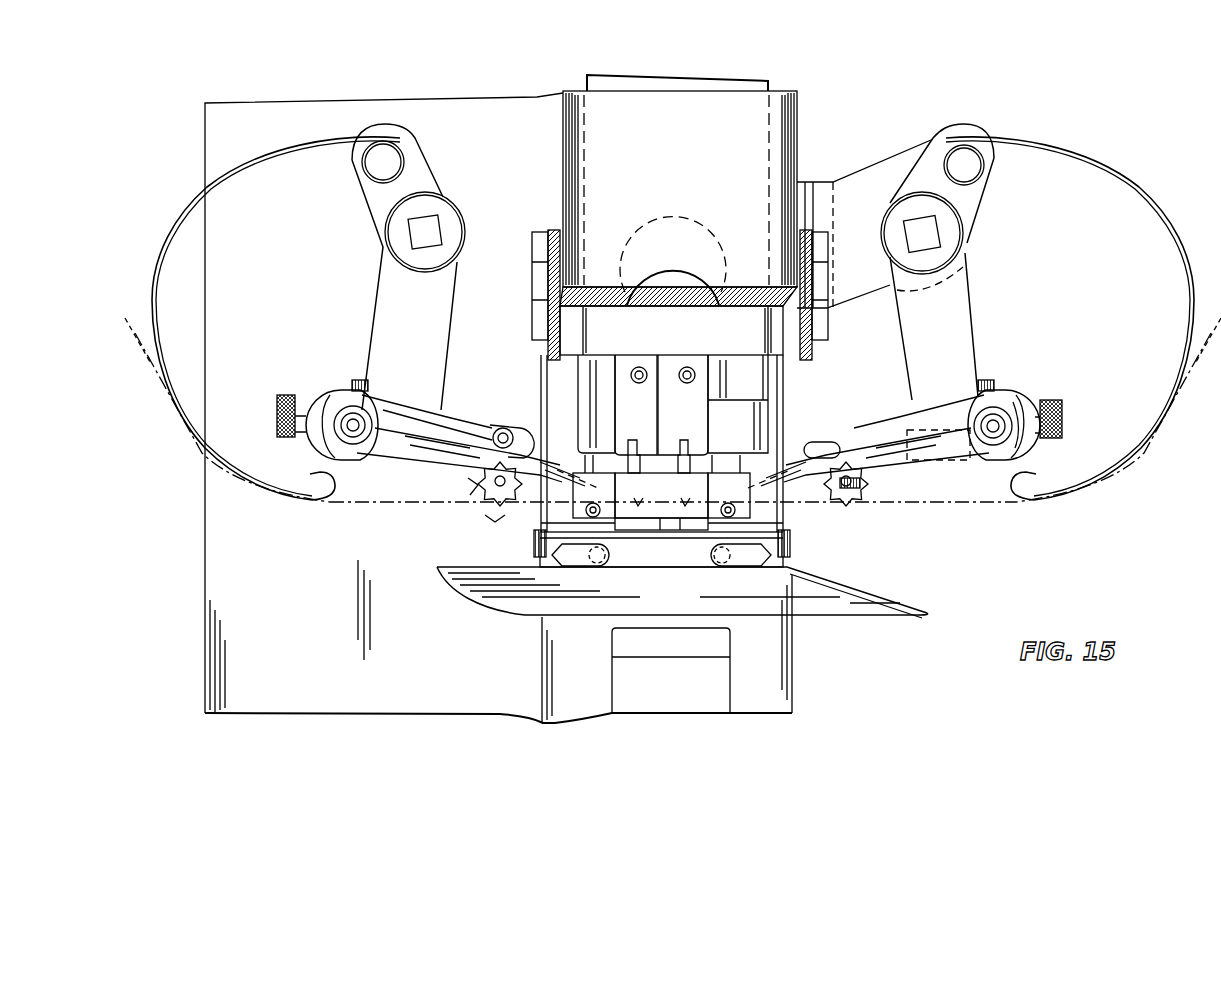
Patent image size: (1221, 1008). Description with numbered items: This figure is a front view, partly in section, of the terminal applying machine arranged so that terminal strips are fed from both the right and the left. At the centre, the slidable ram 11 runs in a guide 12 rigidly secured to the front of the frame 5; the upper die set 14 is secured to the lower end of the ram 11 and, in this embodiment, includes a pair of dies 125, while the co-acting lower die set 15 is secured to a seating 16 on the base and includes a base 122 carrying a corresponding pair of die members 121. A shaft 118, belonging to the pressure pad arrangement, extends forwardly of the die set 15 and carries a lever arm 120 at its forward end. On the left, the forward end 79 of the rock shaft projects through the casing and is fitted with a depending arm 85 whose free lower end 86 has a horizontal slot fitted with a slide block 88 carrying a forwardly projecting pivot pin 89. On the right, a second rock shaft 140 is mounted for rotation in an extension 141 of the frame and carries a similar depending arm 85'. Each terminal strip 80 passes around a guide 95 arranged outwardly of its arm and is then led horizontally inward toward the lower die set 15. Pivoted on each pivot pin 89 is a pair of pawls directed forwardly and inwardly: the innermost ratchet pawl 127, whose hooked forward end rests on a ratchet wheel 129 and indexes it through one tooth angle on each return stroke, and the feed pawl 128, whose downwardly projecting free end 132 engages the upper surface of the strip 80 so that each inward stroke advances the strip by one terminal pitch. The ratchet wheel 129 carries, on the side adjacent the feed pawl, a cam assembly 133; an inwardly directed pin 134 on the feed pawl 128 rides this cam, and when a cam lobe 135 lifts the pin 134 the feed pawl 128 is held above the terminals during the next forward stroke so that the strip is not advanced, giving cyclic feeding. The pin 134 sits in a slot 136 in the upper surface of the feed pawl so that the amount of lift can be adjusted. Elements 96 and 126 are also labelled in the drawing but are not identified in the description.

The frame 5 is at (483, 122).
The slidable ram 11 is at (746, 90).
The guide 12 is at (790, 120).
The upper die set 14 is at (712, 438).
The lower die set 15 is at (662, 530).
The seating 16 is at (645, 555).
The forward end of the rock shaft 79 is at (432, 226).
The terminal strip 80 is at (300, 497).
The depending arm 85 is at (389, 267).
The depending arm 85' is at (959, 262).
The free lower end 86 is at (395, 400).
The slide block 88 is at (352, 405).
The pivot pin 89 is at (338, 430).
The guide 95 is at (286, 148).
The pivot 96 is at (396, 163).
The shaft 118 is at (613, 562).
The lever arm 120 is at (592, 562).
The die members 121 is at (678, 520).
The base 122 is at (545, 522).
The dies 125 is at (655, 416).
The ratchet wheel 126 is at (468, 502).
The ratchet pawl 127 is at (452, 422).
The feed pawl 128 is at (405, 460).
The ratchet wheel 129 is at (862, 488).
The downwardly projecting free end 132 is at (582, 478).
The cam assembly 133 is at (826, 515).
The pin 134 is at (510, 428).
The cam lobe 135 is at (470, 487).
The slot 136 is at (500, 428).
The second rock shaft 140 is at (932, 235).
The extension 141 is at (881, 170).